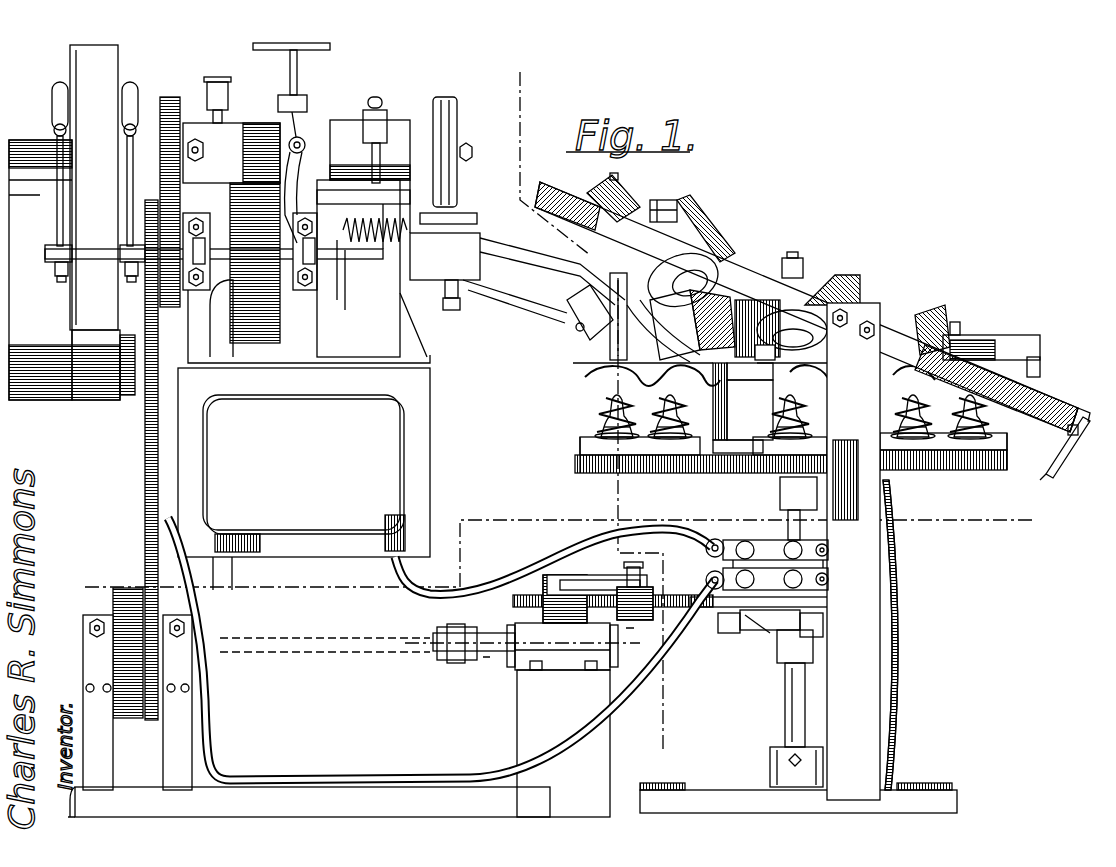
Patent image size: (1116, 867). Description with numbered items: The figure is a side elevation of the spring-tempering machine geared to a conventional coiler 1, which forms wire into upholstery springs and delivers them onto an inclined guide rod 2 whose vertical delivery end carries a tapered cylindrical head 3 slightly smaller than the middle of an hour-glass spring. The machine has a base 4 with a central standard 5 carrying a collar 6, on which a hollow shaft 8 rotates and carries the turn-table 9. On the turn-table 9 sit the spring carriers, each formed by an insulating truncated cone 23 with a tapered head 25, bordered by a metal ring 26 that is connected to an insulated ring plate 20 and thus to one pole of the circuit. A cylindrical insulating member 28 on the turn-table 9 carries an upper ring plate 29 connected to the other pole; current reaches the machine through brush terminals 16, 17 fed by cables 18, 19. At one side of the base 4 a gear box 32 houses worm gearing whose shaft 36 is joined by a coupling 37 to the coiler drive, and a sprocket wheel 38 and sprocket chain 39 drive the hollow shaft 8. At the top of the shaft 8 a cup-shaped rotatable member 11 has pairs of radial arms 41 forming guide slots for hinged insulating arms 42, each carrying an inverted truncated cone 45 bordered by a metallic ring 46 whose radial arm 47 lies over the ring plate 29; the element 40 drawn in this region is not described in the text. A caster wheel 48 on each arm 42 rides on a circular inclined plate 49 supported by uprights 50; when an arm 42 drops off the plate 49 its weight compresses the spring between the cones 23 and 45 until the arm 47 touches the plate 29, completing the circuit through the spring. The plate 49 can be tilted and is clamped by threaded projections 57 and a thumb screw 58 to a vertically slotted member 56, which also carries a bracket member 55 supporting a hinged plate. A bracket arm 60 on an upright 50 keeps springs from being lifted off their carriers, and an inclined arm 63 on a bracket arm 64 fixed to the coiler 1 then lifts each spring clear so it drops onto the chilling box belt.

The coiler 1 is at (201, 347).
The guide rod 2 is at (503, 256).
The cylindrical head 3 is at (535, 72).
The base 4 is at (100, 587).
The central standard 5 is at (785, 718).
The collar 6 is at (775, 640).
The hollow shaft 8 is at (785, 508).
The turn-table 9 is at (487, 660).
The rotatable member 11 is at (830, 280).
The terminal 16 is at (767, 566).
The terminal 17 is at (778, 550).
The cable 18 is at (470, 777).
The cable 19 is at (495, 590).
The ring plate 20 is at (730, 440).
The truncated cone 23 is at (603, 422).
The head 25 is at (660, 402).
The metal ring 26 is at (622, 447).
The cylindrical member 28 is at (720, 425).
The ring plate 29 is at (701, 380).
The gear box 32 is at (570, 668).
The shaft 36 is at (487, 640).
The coupling 37 is at (455, 660).
The sprocket wheel 38 is at (538, 575).
The sprocket chain 39 is at (660, 597).
The spring wire 40 is at (592, 377).
The arms 41 is at (757, 331).
The arm 42 is at (630, 205).
The inverted truncated cone-shaped member 45 is at (668, 290).
The metallic ring 46 is at (625, 243).
The radially extending arm 47 is at (703, 320).
The caster wheel 48 is at (1030, 380).
The circular inclined plate 49 is at (560, 185).
The uprights 50 is at (890, 712).
The bracket member 55 is at (1068, 430).
The vertically slotted member 56 is at (1050, 476).
The threaded projections 57 is at (1068, 447).
The thumb screw 58 is at (1085, 412).
The bracket arm 60 is at (885, 385).
The arm 63 is at (663, 326).
The bracket arm 64 is at (553, 318).